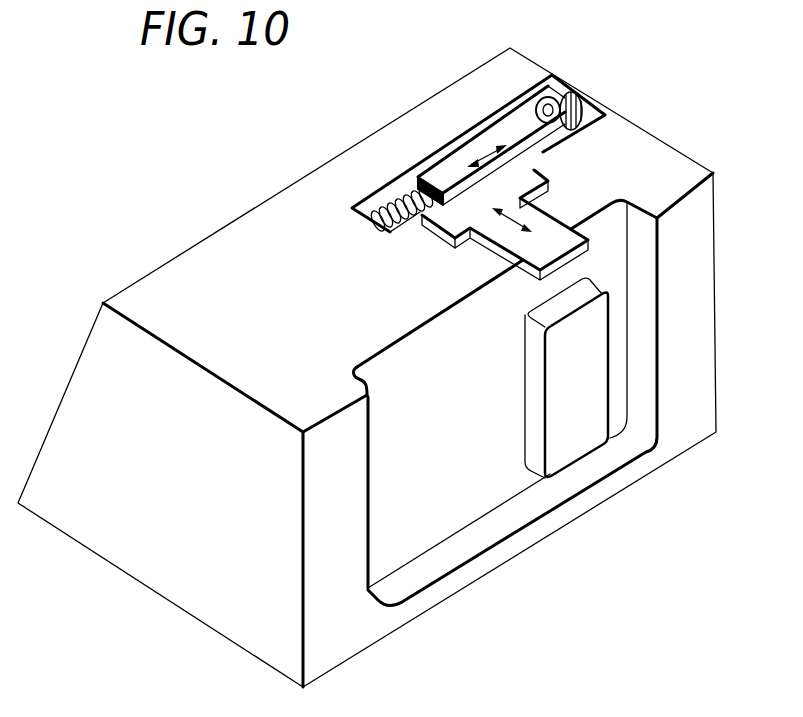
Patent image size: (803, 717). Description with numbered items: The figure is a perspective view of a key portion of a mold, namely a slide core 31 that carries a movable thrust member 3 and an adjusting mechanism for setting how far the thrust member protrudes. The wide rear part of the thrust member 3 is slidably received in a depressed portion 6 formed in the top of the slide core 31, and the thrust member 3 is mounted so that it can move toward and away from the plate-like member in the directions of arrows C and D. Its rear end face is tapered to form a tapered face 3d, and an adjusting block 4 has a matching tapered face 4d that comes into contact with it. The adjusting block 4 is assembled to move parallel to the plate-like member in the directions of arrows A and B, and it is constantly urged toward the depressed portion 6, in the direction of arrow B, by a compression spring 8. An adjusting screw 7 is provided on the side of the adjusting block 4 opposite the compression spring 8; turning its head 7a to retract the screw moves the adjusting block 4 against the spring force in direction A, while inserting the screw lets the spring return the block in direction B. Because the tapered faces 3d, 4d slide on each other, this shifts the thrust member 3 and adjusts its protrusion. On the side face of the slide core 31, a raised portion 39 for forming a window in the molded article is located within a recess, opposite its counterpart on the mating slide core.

The thrust member 3 is at (540, 213).
The tapered face 3d is at (447, 214).
The adjusting block 4 is at (491, 107).
The tapered face 4d is at (468, 150).
The depressed portion 6 is at (413, 165).
The adjusting screw 7 is at (604, 89).
The head 7a is at (562, 95).
The compression spring 8 is at (392, 200).
The slide core 31 is at (722, 215).
The raised portion 39 is at (597, 440).